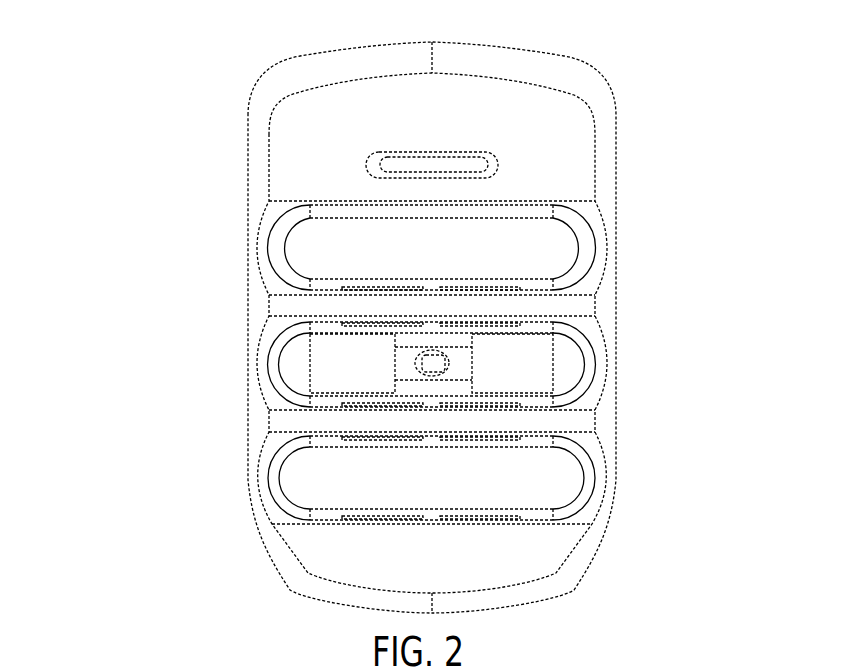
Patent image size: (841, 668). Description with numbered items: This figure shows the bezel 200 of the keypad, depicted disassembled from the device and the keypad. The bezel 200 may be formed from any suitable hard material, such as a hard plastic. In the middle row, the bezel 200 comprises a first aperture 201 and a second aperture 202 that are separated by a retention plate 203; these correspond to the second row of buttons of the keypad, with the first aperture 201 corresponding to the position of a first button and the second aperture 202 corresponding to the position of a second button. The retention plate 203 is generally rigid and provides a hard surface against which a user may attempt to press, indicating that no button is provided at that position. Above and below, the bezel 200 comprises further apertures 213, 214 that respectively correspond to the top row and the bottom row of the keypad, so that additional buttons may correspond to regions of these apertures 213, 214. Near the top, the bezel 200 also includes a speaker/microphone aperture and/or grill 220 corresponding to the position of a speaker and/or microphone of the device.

The bezel 200 is at (88, 35).
The speaker/microphone aperture and/or grill 220 is at (362, 165).
The aperture 213 is at (297, 250).
The first aperture 201 is at (297, 358).
The retention plate 203 is at (413, 365).
The second aperture 202 is at (565, 360).
The aperture 214 is at (297, 479).